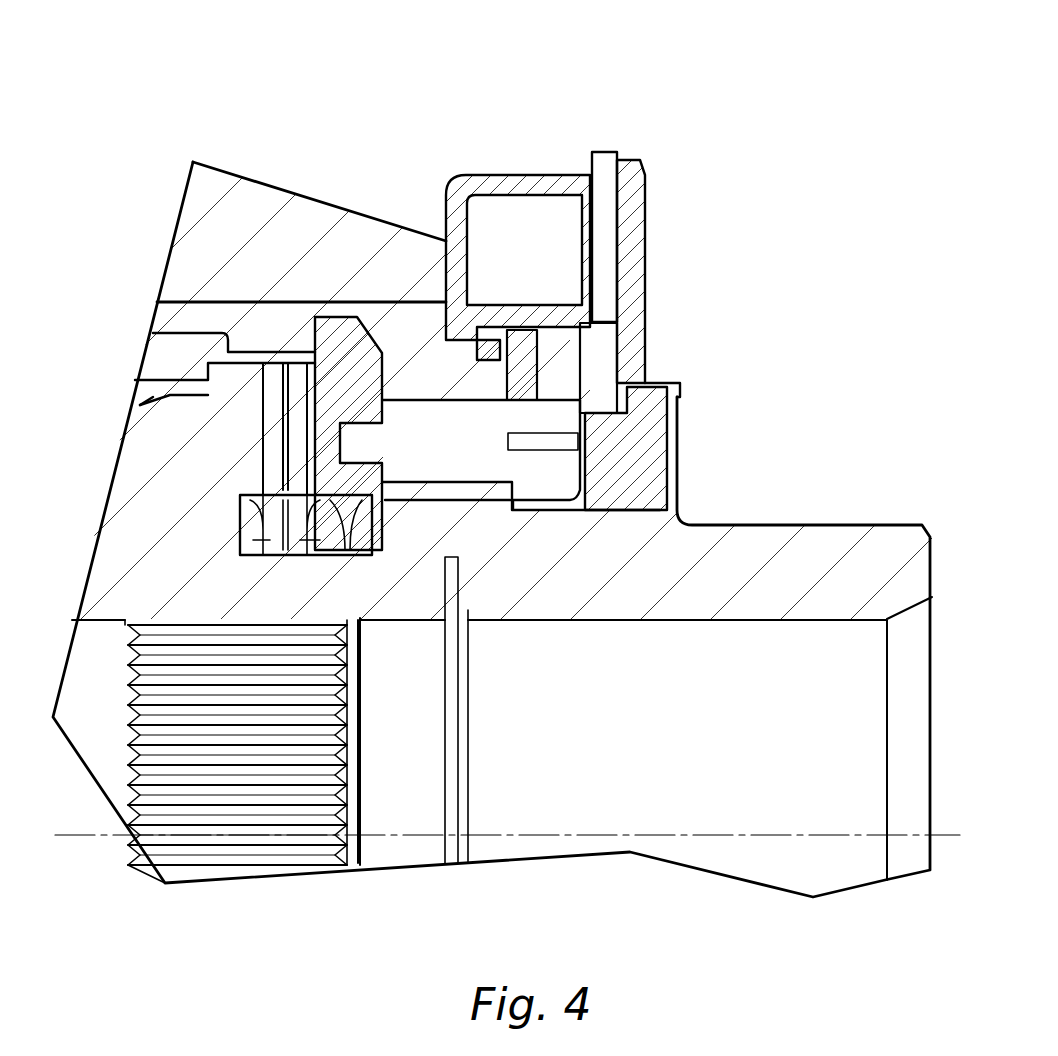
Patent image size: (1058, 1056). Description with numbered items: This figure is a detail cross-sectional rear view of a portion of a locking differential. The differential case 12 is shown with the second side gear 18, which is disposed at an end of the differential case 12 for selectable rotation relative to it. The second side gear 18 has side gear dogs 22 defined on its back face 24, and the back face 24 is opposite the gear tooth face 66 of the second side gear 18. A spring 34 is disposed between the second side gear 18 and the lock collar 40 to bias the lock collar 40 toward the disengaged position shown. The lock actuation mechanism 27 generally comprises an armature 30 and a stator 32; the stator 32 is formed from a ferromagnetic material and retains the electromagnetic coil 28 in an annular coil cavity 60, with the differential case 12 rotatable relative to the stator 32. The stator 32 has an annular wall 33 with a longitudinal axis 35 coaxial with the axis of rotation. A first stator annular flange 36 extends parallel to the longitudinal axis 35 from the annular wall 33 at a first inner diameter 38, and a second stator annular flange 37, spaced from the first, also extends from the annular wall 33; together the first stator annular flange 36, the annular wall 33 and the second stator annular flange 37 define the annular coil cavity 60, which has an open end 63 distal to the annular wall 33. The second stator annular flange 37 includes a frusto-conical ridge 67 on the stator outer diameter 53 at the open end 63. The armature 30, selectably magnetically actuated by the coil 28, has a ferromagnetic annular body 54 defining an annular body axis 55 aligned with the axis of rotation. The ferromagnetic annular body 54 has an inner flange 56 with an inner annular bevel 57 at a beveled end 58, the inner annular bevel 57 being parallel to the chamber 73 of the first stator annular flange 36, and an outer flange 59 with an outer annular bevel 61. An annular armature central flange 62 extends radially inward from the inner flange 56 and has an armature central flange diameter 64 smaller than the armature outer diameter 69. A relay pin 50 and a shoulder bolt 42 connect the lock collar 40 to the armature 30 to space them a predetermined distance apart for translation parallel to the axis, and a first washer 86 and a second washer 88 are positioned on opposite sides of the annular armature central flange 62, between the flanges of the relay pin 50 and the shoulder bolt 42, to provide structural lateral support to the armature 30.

The differential case 12 is at (237, 205).
The second side gear 18 is at (245, 462).
The side gear dogs 22 is at (273, 397).
The back face 24 is at (273, 400).
The lock actuation mechanism 27 is at (785, 178).
The electromagnetic coil 28 is at (517, 212).
The armature 30 is at (633, 198).
The stator 32 is at (537, 178).
The annular wall 33 is at (455, 290).
The spring 34 is at (310, 527).
The longitudinal axis 35 is at (192, 835).
The first stator annular flange 36 is at (522, 315).
The second stator annular flange 37 is at (568, 185).
The first inner diameter 38 is at (535, 330).
The lock collar 40 is at (335, 362).
The shoulder bolt 42 is at (675, 447).
The relay pin 50 is at (482, 482).
The stator outer diameter 53 is at (537, 190).
The ferromagnetic annular body 54 is at (633, 237).
The annular body axis 55 is at (947, 835).
The inner flange 56 is at (607, 350).
The inner annular bevel 57 is at (615, 323).
The beveled end 58 is at (570, 332).
The outer flange 59 is at (628, 215).
The annular coil cavity 60 is at (525, 200).
The outer annular bevel 61 is at (640, 170).
The annular armature central flange 62 is at (675, 413).
The open end 63 is at (600, 212).
The armature central flange diameter 64 is at (633, 430).
The gear tooth face 66 is at (140, 403).
The frusto-conical ridge 67 is at (558, 190).
The armature outer diameter 69 is at (633, 190).
The chamber 73 is at (600, 267).
The first washer 86 is at (580, 367).
The second washer 88 is at (650, 377).